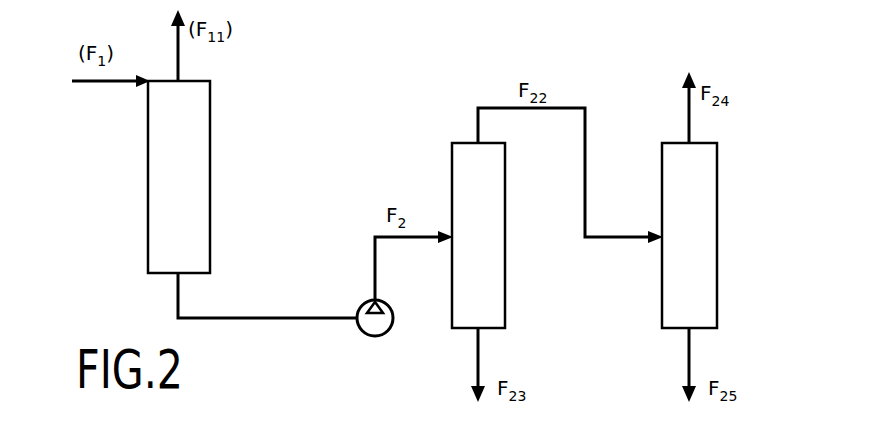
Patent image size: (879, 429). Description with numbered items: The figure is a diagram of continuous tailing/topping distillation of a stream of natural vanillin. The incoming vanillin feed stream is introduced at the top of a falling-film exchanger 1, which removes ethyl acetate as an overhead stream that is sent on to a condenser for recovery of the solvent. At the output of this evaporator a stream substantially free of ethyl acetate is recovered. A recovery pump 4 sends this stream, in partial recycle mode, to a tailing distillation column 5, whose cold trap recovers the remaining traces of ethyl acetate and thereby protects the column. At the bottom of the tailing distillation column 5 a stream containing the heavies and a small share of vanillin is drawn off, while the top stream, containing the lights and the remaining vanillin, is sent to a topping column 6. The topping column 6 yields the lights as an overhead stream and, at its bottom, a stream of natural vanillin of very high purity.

The falling-film exchanger 1 is at (167, 191).
The recovery pump 4 is at (383, 325).
The tailing distillation column 5 is at (462, 165).
The topping column 6 is at (705, 190).